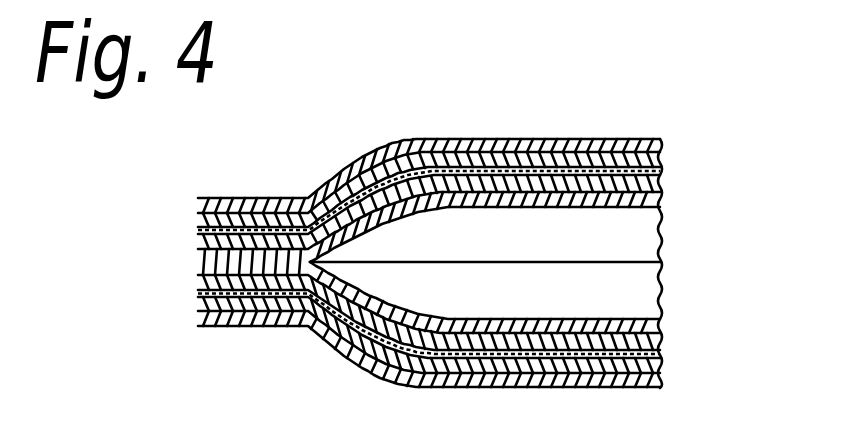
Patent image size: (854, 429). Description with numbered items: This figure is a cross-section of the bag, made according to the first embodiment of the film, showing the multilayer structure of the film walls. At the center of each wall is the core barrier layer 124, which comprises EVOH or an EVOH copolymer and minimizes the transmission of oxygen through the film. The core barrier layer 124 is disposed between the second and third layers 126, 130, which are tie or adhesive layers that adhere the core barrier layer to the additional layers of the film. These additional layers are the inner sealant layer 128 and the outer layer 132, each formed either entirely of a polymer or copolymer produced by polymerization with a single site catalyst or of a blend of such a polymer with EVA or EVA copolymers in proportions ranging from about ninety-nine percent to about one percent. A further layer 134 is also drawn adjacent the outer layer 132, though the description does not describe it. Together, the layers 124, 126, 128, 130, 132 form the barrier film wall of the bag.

The core barrier layer 124 is at (663, 172).
The second layer 126 is at (663, 193).
The inner sealant layer 128 is at (663, 201).
The third layer 130 is at (663, 366).
The outer layer 132 is at (663, 144).
The intermediate layer 134 is at (663, 161).